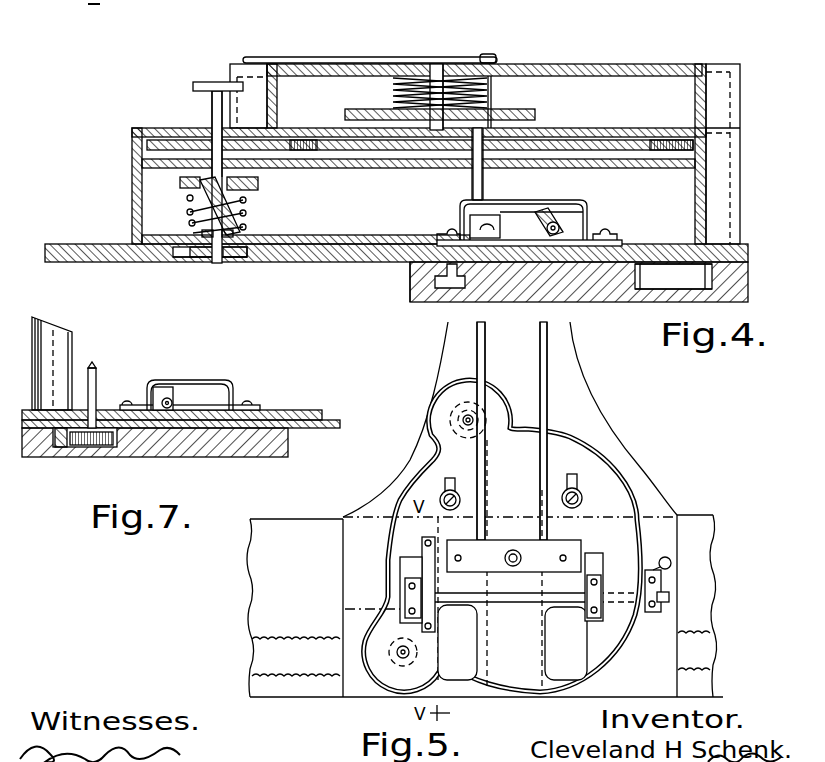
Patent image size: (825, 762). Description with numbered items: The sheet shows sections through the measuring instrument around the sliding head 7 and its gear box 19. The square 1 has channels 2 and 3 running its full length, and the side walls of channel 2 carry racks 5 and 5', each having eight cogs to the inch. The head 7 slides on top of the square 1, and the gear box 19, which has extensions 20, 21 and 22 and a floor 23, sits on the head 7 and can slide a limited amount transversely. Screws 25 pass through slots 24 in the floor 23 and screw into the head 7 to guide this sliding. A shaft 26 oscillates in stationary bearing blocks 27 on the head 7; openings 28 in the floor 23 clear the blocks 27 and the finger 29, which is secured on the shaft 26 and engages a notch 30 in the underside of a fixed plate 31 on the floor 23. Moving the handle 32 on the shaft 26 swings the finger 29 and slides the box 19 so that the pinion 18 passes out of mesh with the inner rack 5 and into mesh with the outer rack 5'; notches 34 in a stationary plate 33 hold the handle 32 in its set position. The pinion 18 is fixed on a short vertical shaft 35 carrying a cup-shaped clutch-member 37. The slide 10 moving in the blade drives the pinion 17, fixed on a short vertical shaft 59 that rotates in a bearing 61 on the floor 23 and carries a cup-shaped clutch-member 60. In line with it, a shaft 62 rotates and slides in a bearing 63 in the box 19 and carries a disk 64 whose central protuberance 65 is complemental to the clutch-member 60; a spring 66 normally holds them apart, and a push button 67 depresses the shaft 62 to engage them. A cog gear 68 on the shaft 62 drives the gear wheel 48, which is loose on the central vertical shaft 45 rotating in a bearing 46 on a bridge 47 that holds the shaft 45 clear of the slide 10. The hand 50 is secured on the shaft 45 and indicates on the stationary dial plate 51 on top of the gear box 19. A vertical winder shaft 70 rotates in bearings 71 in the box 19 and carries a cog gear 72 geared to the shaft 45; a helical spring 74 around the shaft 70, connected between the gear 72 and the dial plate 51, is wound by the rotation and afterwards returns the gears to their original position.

In FIG. 4, the square 1 is at (410, 283).
In FIG. 7, the square 1 is at (205, 447).
In FIG. 5, the square 1 is at (485, 608).
In FIG. 4, the channel 2 is at (673, 276).
In FIG. 4, the channel 3 is at (437, 287).
In FIG. 4, the rack 5 is at (700, 229).
In FIG. 7, the rack 5 is at (95, 464).
In FIG. 5, the rack 5 is at (706, 652).
In FIG. 4, the rack 5' is at (652, 303).
In FIG. 7, the rack 5' is at (43, 460).
In FIG. 5, the rack 5' is at (281, 655).
In FIG. 4, the head 7 is at (733, 253).
In FIG. 7, the head 7 is at (285, 422).
In FIG. 5, the head 7 is at (484, 606).
In FIG. 5, the slide 10 is at (510, 419).
In FIG. 4, the pinion 17 is at (233, 252).
In FIG. 5, the pinion 17 is at (358, 672).
In FIG. 7, the pinion 18 is at (95, 455).
In FIG. 5, the pinion 18 is at (432, 387).
In FIG. 4, the gear box 19 is at (133, 188).
In FIG. 7, the gear box 19 is at (55, 355).
In FIG. 5, the gear box 19 is at (425, 455).
In FIG. 5, the extension 20 is at (428, 414).
In FIG. 5, the extension 21 is at (372, 682).
In FIG. 5, the extension 22 is at (640, 495).
In FIG. 4, the floor 23 is at (347, 237).
In FIG. 7, the floor 23 is at (265, 412).
In FIG. 5, the floor 23 is at (559, 431).
In FIG. 5, the slots 24 is at (445, 490).
In FIG. 5, the screws 25 is at (460, 500).
In FIG. 4, the shaft 26 is at (553, 228).
In FIG. 7, the shaft 26 is at (167, 410).
In FIG. 5, the shaft 26 is at (513, 602).
In FIG. 7, the bearing blocks 27 is at (162, 398).
In FIG. 5, the bearing blocks 27 is at (405, 598).
In FIG. 5, the openings 28 is at (413, 565).
In FIG. 7, the finger 29 is at (180, 388).
In FIG. 7, the notch 30 is at (167, 398).
In FIG. 4, the fixed plate 31 is at (522, 203).
In FIG. 7, the fixed plate 31 is at (228, 388).
In FIG. 5, the fixed plate 31 is at (400, 610).
In FIG. 5, the handle 32 is at (671, 562).
In FIG. 5, the stationary plate 33 is at (658, 608).
In FIG. 5, the notches 34 is at (661, 583).
In FIG. 7, the vertical shaft 35 is at (95, 372).
In FIG. 5, the clutch-member 37 is at (397, 654).
In FIG. 4, the vertical shaft 45 is at (472, 183).
In FIG. 5, the vertical shaft 45 is at (514, 552).
In FIG. 5, the bearing 46 is at (522, 560).
In FIG. 4, the bridge 47 is at (483, 220).
In FIG. 5, the bridge 47 is at (492, 568).
In FIG. 4, the gear wheel 48 is at (643, 147).
In FIG. 4, the hand 50 is at (282, 58).
In FIG. 4, the dial plate 51 is at (593, 64).
In FIG. 4, the vertical shaft 59 is at (197, 263).
In FIG. 4, the clutch-member 60 is at (210, 193).
In FIG. 5, the clutch-member 60 is at (468, 414).
In FIG. 4, the bearing 61 is at (250, 232).
In FIG. 4, the shaft 62 is at (222, 118).
In FIG. 4, the bearing 63 is at (137, 162).
In FIG. 4, the disk 64 is at (253, 183).
In FIG. 4, the protuberance 65 is at (193, 205).
In FIG. 4, the spring 66 is at (230, 213).
In FIG. 4, the push button 67 is at (230, 82).
In FIG. 4, the cog gear 68 is at (190, 143).
In FIG. 4, the winder shaft 70 is at (430, 63).
In FIG. 4, the bearings 71 is at (452, 66).
In FIG. 4, the cog gear 72 is at (578, 101).
In FIG. 4, the helical spring 74 is at (480, 90).